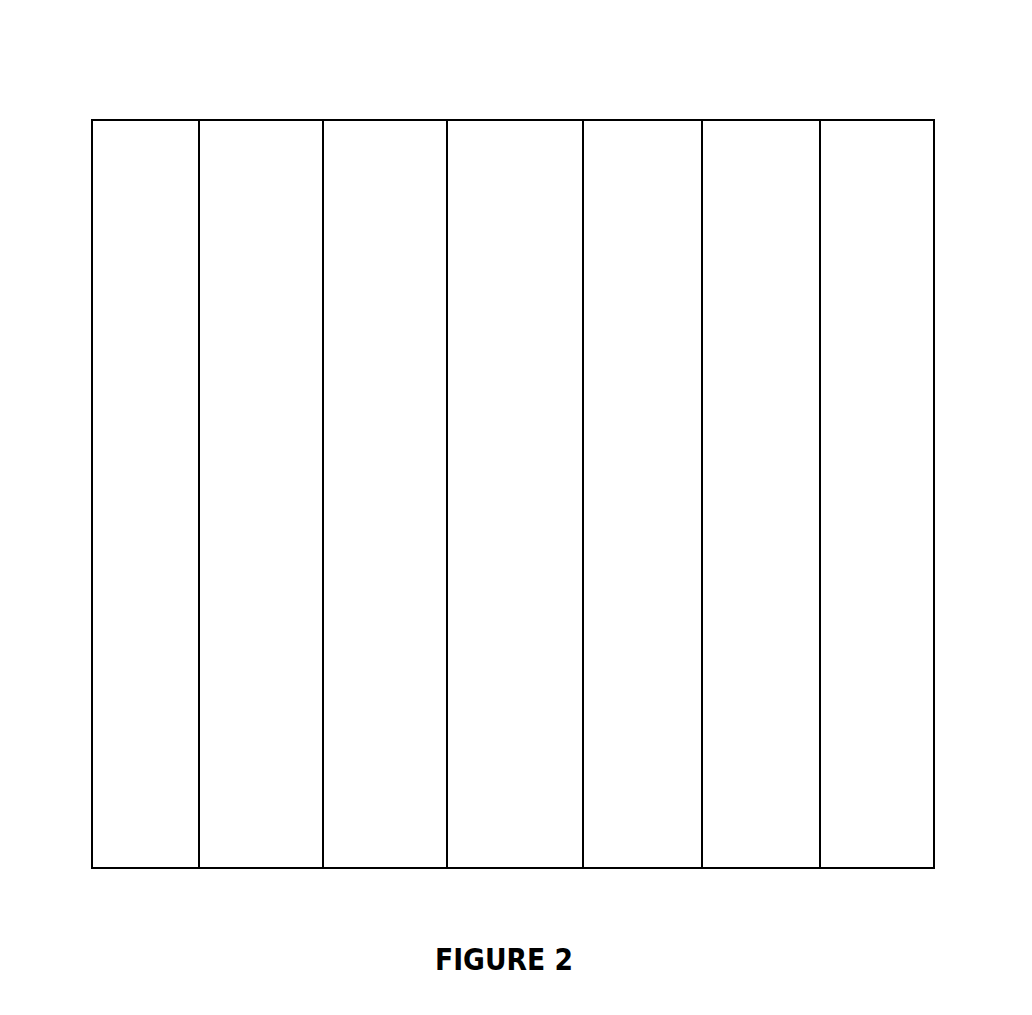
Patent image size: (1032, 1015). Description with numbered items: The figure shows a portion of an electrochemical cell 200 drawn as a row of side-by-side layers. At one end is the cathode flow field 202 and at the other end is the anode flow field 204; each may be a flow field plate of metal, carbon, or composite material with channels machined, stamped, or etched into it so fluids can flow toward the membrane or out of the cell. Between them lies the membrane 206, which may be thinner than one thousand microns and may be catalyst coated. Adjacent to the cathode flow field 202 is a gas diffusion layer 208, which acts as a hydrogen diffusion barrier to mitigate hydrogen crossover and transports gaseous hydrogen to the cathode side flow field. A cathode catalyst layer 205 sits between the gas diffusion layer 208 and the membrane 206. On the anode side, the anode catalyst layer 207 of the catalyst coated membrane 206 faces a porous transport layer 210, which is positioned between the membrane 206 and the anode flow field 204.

The electrochemical cell 200 is at (146, 89).
The cathode flow field 202 is at (125, 479).
The gas diffusion layer 208 is at (282, 479).
The cathode catalyst layer 205 is at (406, 479).
The membrane 206 is at (536, 479).
The anode catalyst layer 207 is at (622, 479).
The porous transport layer 210 is at (782, 479).
The anode flow field 204 is at (898, 479).